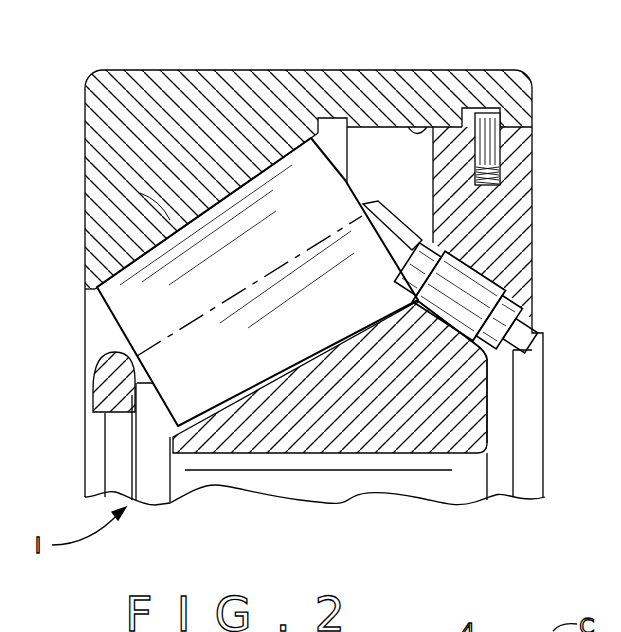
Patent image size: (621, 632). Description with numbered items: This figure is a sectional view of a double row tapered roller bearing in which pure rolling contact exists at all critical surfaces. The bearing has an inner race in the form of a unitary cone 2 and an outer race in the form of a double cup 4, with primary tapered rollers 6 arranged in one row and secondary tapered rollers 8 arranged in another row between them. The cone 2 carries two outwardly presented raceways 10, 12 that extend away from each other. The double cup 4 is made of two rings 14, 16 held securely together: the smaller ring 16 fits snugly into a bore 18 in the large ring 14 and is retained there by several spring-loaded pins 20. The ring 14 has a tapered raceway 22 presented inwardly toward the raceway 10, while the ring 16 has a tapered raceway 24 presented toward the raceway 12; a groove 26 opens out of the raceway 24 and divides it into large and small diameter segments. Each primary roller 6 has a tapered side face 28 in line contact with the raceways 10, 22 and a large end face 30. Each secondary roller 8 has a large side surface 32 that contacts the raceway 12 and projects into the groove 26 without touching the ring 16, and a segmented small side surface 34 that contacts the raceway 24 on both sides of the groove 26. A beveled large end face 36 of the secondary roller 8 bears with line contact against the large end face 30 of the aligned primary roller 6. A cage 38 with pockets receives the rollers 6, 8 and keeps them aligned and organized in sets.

The cone 2 is at (362, 428).
The double cup 4 is at (138, 115).
The primary tapered rollers 6 is at (137, 260).
The secondary tapered rollers 8 is at (470, 350).
The raceway 10 is at (235, 372).
The raceway 12 is at (505, 360).
The ring 14 is at (193, 115).
The ring 16 is at (490, 214).
The bore 18 is at (427, 127).
The spring-loaded pins 20 is at (483, 113).
The tapered raceway 22 is at (264, 183).
The tapered raceway 24 is at (456, 228).
The groove 26 is at (518, 256).
The tapered side face 28 is at (140, 193).
The large end face 30 is at (355, 190).
The large side surface 32 is at (510, 262).
The small side surface 34 is at (470, 242).
The beveled large end face 36 is at (420, 243).
The cage 38 is at (120, 383).